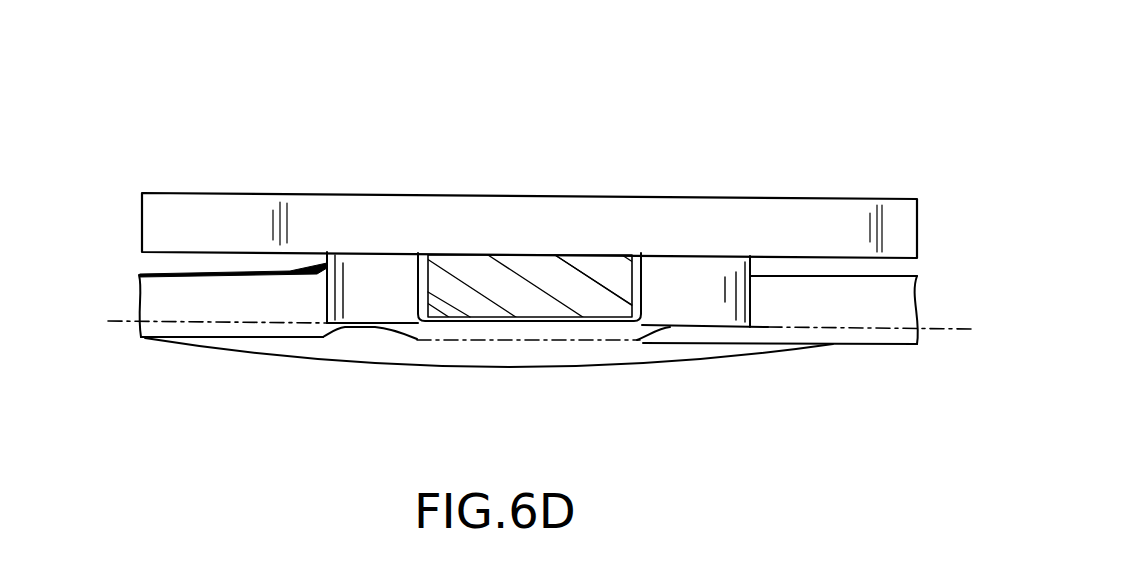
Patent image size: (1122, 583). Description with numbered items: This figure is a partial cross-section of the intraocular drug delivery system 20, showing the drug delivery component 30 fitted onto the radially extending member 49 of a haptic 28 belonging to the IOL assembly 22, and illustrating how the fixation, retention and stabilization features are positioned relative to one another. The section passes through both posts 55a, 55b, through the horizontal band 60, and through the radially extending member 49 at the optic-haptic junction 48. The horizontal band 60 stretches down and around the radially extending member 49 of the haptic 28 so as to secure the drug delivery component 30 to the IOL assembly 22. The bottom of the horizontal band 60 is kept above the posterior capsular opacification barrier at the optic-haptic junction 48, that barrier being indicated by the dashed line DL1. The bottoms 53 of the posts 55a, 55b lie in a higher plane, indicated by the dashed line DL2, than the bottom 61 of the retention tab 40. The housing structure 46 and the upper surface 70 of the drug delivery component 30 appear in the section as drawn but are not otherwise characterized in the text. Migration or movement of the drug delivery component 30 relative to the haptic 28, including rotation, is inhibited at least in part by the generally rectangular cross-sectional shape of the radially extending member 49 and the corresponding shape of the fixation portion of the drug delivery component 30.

The intraocular drug delivery system 20 is at (578, 107).
The IOL assembly 22 is at (124, 300).
The haptic 28 is at (512, 258).
The drug delivery component 30 is at (906, 180).
The retention tab 40 is at (186, 340).
The seal housing / carrier 46 is at (485, 255).
The optic-haptic junction 48 is at (566, 280).
The radially extending member 49 is at (538, 272).
The bottoms of the posts 53 is at (355, 326).
The post 55a is at (386, 273).
The second chamber 55b is at (722, 314).
The horizontal band 60 is at (545, 335).
The bottom of the retention tab 61 is at (240, 338).
The upper surface 70 is at (780, 193).
The dashed line indicating PCO barrier DL1 is at (367, 341).
The dashed lines indicating plane of post bottoms DL2 is at (213, 324).